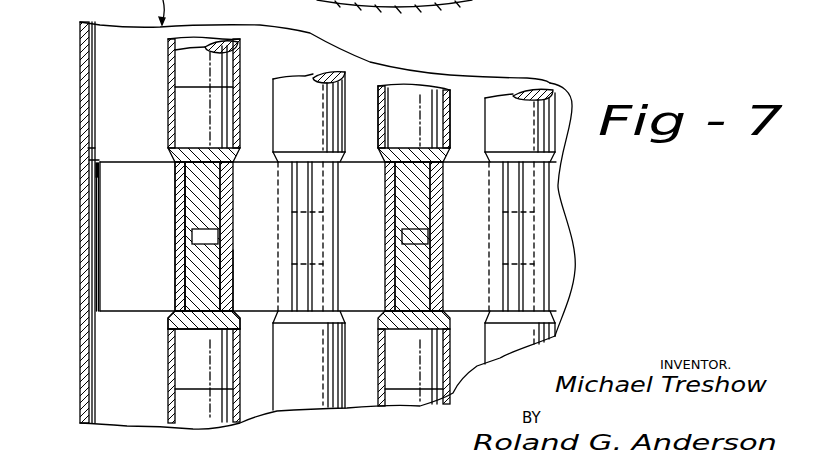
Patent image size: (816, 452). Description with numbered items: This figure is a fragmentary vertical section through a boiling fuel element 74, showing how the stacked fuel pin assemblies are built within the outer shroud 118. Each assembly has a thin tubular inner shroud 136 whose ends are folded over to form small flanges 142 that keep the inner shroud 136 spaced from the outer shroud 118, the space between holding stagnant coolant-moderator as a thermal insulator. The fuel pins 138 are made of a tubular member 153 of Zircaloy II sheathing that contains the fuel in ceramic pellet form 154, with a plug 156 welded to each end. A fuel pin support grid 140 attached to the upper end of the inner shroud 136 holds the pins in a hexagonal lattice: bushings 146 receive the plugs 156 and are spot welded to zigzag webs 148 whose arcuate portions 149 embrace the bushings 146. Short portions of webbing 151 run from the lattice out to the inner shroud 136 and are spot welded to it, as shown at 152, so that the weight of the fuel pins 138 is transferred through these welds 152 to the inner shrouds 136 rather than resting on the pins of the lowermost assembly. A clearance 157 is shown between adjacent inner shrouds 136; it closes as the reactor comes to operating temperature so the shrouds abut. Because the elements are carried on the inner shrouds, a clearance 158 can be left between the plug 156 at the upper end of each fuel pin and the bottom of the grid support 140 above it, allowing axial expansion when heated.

The boiling fuel element 74 is at (568, 70).
The outer shroud 118 is at (80, 80).
The inner shroud 136 is at (93, 79).
The fuel pin 138 is at (173, 98).
The fuel pin support grid 140 is at (134, 158).
The flange 142 is at (88, 150).
The bushing 146 is at (187, 239).
The web 148 is at (173, 294).
The arcuate portion 149 is at (173, 220).
The short portion of webbing 151 is at (97, 224).
The weld 152 is at (95, 173).
The tubular member 153 is at (238, 50).
The fuel pellet 154 is at (218, 70).
The plug 156 is at (200, 173).
The clearance 157 is at (90, 163).
The clearance 158 is at (237, 316).